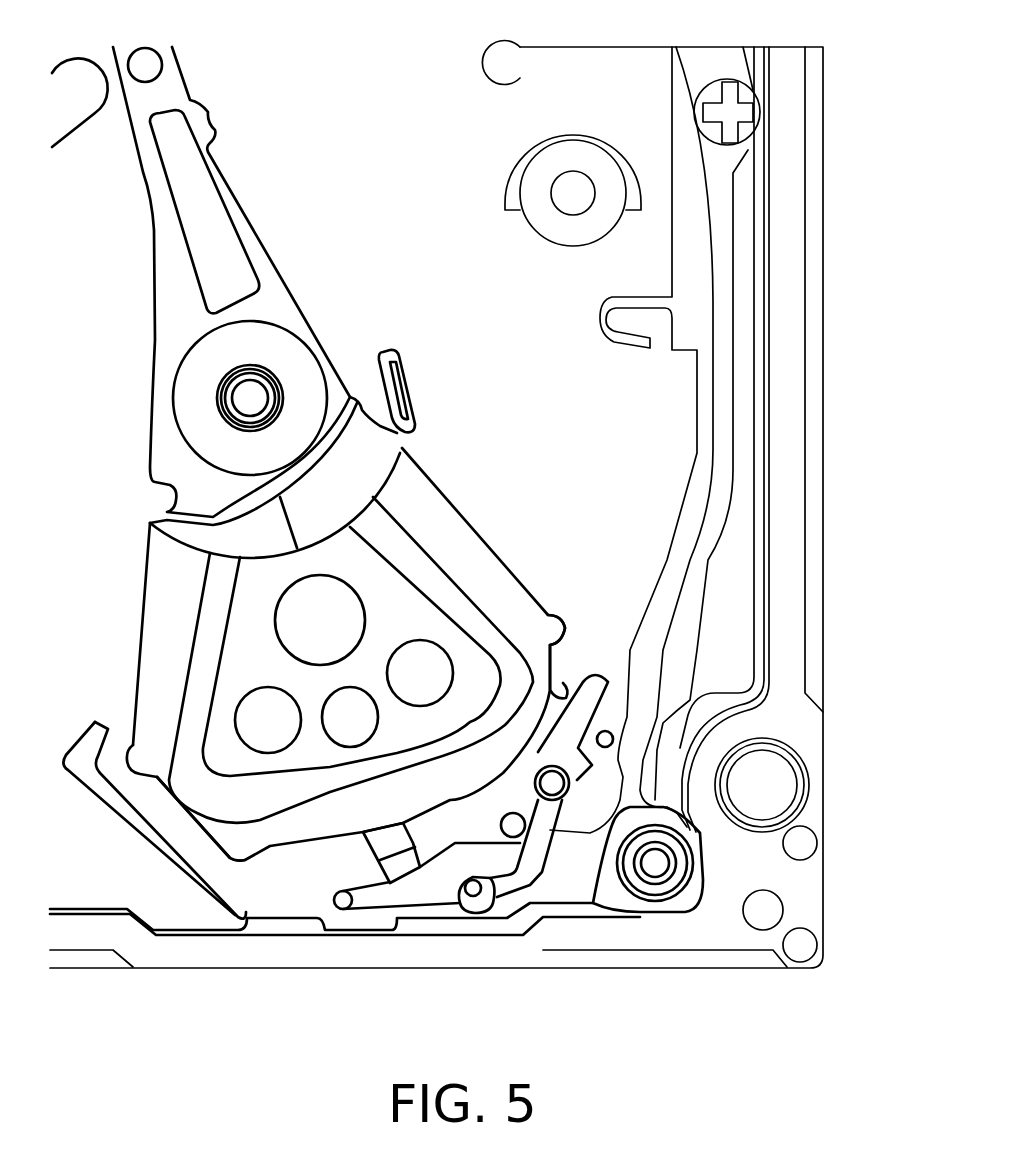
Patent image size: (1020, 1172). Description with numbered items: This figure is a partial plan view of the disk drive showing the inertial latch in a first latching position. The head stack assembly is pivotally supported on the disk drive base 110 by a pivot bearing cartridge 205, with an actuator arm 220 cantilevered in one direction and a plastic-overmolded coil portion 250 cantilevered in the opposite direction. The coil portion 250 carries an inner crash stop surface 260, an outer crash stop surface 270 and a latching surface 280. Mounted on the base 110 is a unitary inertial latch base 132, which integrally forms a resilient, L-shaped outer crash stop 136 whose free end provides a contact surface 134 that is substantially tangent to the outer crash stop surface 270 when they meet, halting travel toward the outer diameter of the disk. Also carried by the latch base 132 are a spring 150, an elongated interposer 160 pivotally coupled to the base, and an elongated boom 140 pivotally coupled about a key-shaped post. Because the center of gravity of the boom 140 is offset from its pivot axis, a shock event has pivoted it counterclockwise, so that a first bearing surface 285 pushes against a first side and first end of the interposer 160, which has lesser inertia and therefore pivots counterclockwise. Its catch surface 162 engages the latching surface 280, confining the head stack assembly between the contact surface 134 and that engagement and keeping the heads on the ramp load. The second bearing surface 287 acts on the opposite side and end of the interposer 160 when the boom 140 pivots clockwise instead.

The disk drive base 110 is at (826, 218).
The elongated boom 140 is at (726, 298).
The catch surface 162 is at (586, 676).
The inertial latch base 132 is at (735, 616).
The actuator arm 220 is at (278, 293).
The pivot bearing cartridge 205 is at (275, 373).
The coil portion 250 is at (435, 505).
The inner crash stop surface 260 is at (553, 623).
The latching surface 280 is at (560, 684).
The contact surface 134 is at (118, 730).
The outer crash stop surface 270 is at (130, 767).
The outer crash stop 136 is at (73, 765).
The spring 150 is at (400, 900).
The interposer 160 is at (520, 880).
The first bearing surface 285 is at (503, 820).
The second bearing surface 287 is at (613, 740).